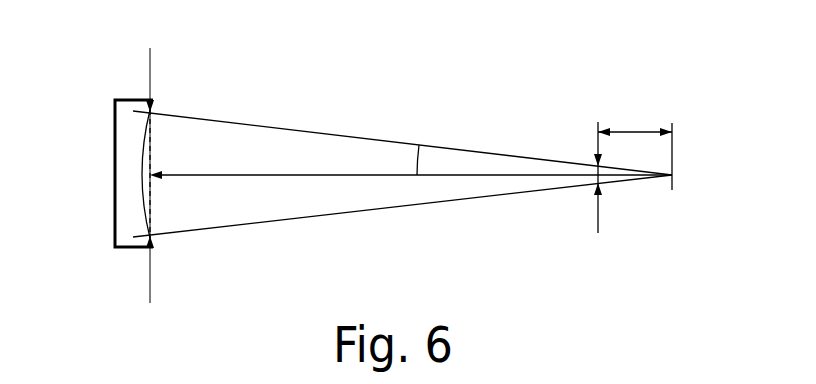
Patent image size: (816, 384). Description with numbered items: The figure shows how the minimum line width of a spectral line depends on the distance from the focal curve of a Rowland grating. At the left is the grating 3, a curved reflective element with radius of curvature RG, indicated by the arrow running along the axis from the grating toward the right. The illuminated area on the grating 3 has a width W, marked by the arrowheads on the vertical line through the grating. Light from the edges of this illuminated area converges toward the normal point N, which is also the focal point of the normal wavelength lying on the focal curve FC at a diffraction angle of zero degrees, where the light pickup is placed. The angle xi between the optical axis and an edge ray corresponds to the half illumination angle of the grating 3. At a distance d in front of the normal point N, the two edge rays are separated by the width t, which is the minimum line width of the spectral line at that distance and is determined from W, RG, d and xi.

The grating 3 is at (102, 133).
The width of illuminated area W is at (150, 162).
The radius of curvature RG is at (288, 158).
The normal point N is at (715, 157).
The minimum line width t is at (598, 192).
The distance from the focal curve d is at (635, 117).
The half illumination angle xi is at (433, 152).